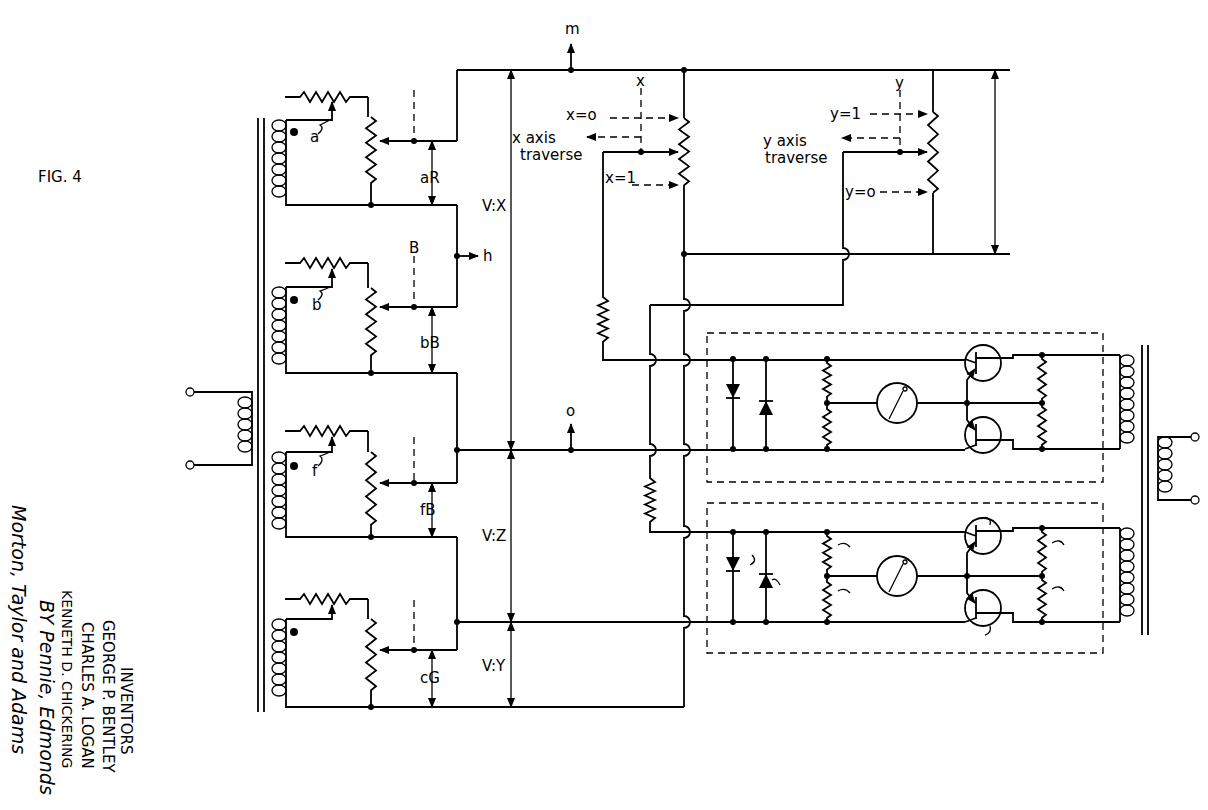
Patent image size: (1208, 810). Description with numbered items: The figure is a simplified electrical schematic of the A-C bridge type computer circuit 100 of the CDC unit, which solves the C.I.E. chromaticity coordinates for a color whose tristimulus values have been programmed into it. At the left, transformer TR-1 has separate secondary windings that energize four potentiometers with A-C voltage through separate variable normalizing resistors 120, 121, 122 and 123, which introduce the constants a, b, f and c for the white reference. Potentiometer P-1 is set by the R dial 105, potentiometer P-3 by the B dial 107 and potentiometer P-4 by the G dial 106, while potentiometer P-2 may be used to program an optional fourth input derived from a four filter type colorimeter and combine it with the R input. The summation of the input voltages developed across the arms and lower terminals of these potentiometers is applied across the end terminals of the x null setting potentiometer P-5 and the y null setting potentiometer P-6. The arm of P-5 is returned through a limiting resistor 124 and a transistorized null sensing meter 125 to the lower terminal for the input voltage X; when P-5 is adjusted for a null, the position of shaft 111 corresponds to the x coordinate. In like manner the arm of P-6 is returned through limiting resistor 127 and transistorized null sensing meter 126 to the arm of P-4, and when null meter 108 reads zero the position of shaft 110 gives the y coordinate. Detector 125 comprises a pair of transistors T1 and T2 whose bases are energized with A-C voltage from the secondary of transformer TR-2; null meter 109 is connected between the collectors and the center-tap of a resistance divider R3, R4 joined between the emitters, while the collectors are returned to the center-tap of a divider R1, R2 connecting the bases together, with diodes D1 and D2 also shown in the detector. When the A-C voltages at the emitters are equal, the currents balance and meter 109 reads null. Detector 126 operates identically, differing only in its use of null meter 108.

The A-C bridge type computer circuit 100 is at (1012, 132).
The R dial 105 is at (422, 112).
The G dial 106 is at (414, 636).
The B dial 107 is at (418, 466).
The null meter 108 is at (906, 593).
The null meter 109 is at (906, 420).
The y null setting shaft 110 is at (974, 126).
The x null setting shaft 111 is at (724, 132).
The variable normalizing resistor 120 is at (320, 95).
The variable normalizing resistor 121 is at (320, 261).
The variable normalizing resistor 122 is at (320, 429).
The variable normalizing resistor 123 is at (320, 597).
The limiting resistor 124 is at (598, 322).
The transistorized null sensing meter 125 is at (1013, 326).
The transistorized null sensing meter 126 is at (1033, 505).
The limiting resistor 127 is at (646, 502).
The transformer TR-1 is at (251, 386).
The transformer TR-2 is at (1160, 420).
The potentiometer P-1 is at (368, 140).
The potentiometer P-2 is at (368, 308).
The potentiometer P-3 is at (366, 483).
The potentiometer P-4 is at (366, 650).
The x null setting potentiometer P-5 is at (694, 163).
The y null setting potentiometer P-6 is at (943, 152).
The diode D1 is at (750, 392).
The diode D2 is at (772, 407).
The resistance divider resistor R1 is at (1064, 372).
The resistance divider resistor R2 is at (1064, 418).
The resistance divider resistor R3 is at (850, 374).
The resistance divider resistor R4 is at (850, 420).
The transistor T1 is at (990, 352).
The transistor T2 is at (990, 453).